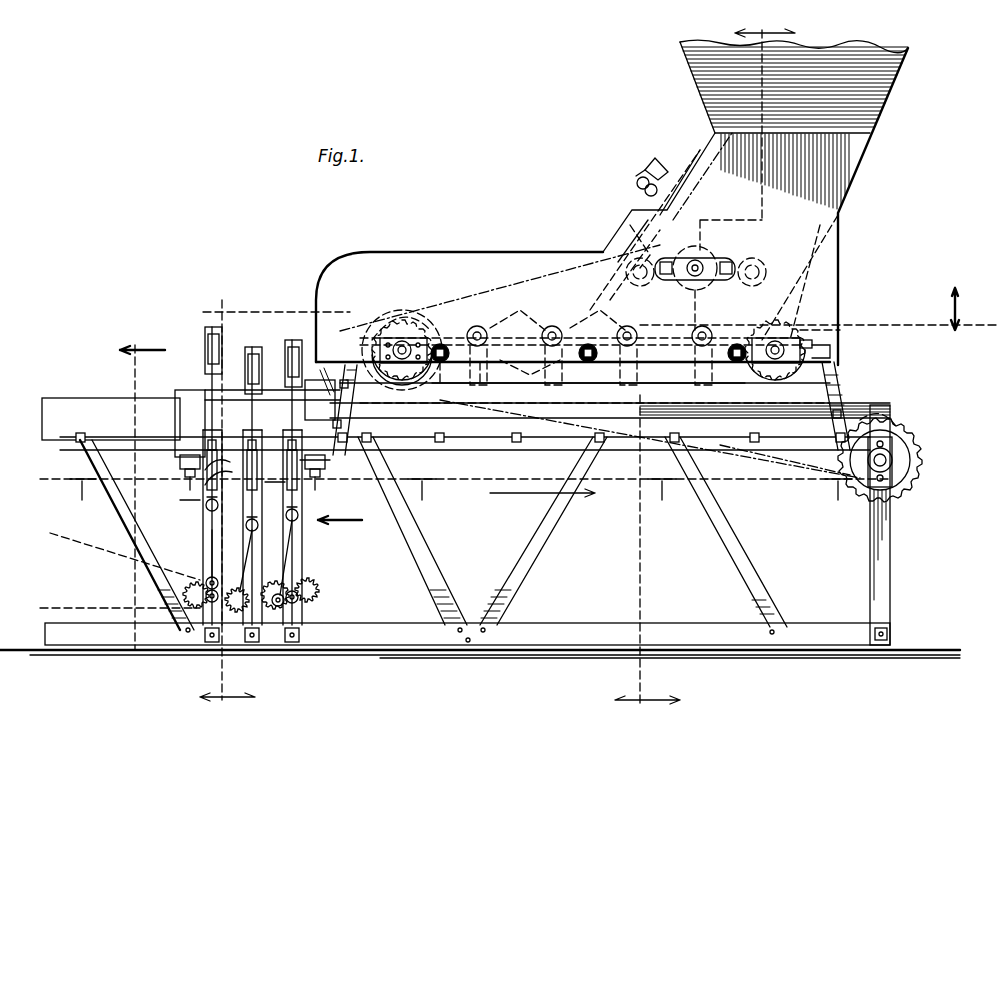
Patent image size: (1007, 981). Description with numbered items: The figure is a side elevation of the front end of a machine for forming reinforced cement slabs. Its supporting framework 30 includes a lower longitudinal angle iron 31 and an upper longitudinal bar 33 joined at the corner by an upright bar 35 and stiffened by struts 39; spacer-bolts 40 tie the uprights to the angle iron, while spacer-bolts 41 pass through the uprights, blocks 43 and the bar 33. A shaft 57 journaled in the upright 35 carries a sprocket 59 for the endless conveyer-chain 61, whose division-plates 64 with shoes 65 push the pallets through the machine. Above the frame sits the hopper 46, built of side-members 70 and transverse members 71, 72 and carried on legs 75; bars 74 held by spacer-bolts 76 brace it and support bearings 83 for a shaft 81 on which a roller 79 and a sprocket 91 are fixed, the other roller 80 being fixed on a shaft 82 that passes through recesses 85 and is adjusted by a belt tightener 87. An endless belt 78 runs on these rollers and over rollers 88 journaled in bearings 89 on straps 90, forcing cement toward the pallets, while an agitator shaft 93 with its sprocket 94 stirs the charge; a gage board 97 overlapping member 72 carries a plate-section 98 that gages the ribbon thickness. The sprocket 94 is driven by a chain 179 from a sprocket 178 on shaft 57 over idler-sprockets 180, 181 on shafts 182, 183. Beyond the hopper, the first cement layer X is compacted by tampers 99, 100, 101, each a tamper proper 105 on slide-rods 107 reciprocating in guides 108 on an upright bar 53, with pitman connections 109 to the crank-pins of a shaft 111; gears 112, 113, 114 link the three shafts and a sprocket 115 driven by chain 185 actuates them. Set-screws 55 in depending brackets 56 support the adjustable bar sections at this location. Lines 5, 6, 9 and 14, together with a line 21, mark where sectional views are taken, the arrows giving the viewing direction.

The broken line 5 is at (705, 368).
The section line 6 is at (227, 513).
The section line 9 is at (340, 531).
The section line 14 is at (820, 309).
The section line 21 is at (142, 485).
The supporting framework 30 is at (823, 574).
The longitudinally-extending angle iron 31 is at (68, 630).
The longitudinally-extending bar 33 is at (745, 400).
The upright bar 35 is at (890, 545).
The strut 39 is at (135, 560).
The spacer-bolt 40 is at (890, 632).
The spacer-bolt 41 is at (80, 432).
The block 43 is at (178, 405).
The hopper 46 is at (622, 176).
The upright bar 53 is at (300, 485).
The set-screw 55 is at (180, 480).
The depending bracket 56 is at (180, 460).
The shaft 57 is at (900, 460).
The sprocket 59 is at (900, 465).
The endless conveyer-chain 61 is at (465, 474).
The division-plate 64 is at (455, 502).
The shoe 65 is at (446, 492).
The side-member 70 is at (484, 252).
The transversely-disposed member 71 is at (838, 240).
The transversely-disposed member 72 is at (700, 150).
The bar 74 is at (595, 370).
The leg 75 is at (350, 395).
The spacer-bolt 76 is at (442, 344).
The endless belt 78 is at (580, 383).
The roller 79 is at (415, 380).
The roller 80 is at (790, 372).
The shaft 81 is at (402, 345).
The shaft 82 is at (772, 338).
The bearing 83 is at (385, 340).
The recess 85 is at (805, 338).
The belt tightener 87 is at (830, 350).
The roller 88 is at (557, 329).
The bearing 89 is at (477, 326).
The strap 90 is at (482, 373).
The sprocket 91 is at (420, 310).
The shaft 93 is at (698, 260).
The sprocket 94 is at (716, 262).
The board 97 is at (653, 170).
The plate-section 98 is at (556, 270).
The tamper 99 is at (292, 338).
The tamper 100 is at (262, 346).
The tamper 101 is at (212, 326).
The tamper proper 105 is at (318, 330).
The slide-rod 107 is at (222, 400).
The guide 108 is at (210, 455).
The pitman connection 109 is at (250, 530).
The shaft 111 is at (290, 608).
The gear 112 is at (300, 595).
The gear 113 is at (255, 590).
The gear 114 is at (215, 580).
The sprocket 115 is at (196, 582).
The sprocket 178 is at (895, 440).
The sprocket-chain 179 is at (855, 372).
The idler-sprocket 180 is at (618, 258).
The idler-sprocket 181 is at (806, 272).
The shaft 182 is at (648, 236).
The shaft 183 is at (762, 262).
The sprocket-chain 185 is at (90, 545).
The first layer x is at (320, 392).